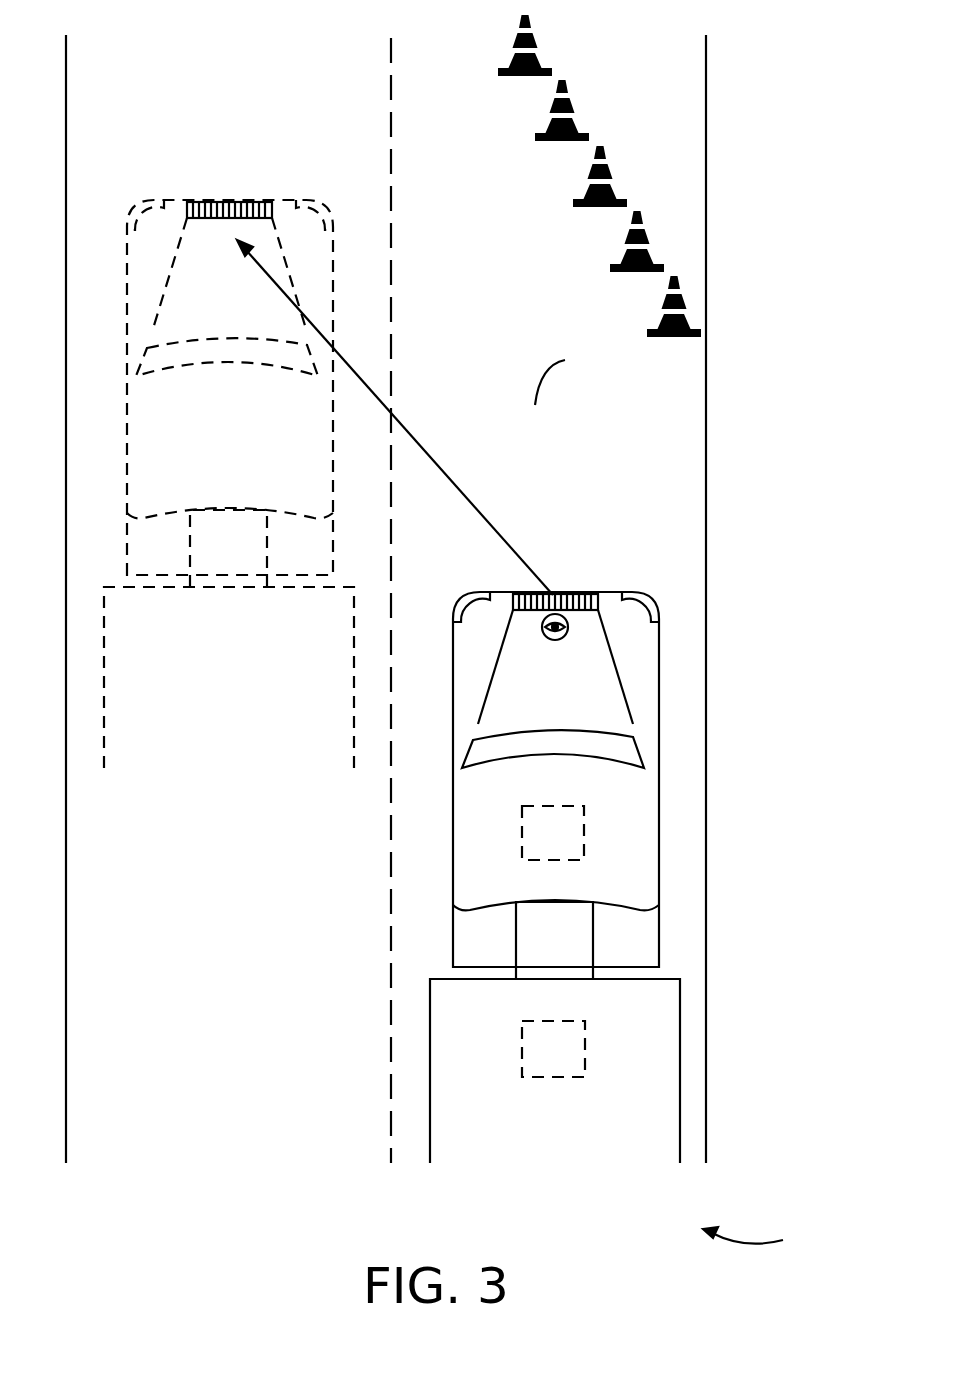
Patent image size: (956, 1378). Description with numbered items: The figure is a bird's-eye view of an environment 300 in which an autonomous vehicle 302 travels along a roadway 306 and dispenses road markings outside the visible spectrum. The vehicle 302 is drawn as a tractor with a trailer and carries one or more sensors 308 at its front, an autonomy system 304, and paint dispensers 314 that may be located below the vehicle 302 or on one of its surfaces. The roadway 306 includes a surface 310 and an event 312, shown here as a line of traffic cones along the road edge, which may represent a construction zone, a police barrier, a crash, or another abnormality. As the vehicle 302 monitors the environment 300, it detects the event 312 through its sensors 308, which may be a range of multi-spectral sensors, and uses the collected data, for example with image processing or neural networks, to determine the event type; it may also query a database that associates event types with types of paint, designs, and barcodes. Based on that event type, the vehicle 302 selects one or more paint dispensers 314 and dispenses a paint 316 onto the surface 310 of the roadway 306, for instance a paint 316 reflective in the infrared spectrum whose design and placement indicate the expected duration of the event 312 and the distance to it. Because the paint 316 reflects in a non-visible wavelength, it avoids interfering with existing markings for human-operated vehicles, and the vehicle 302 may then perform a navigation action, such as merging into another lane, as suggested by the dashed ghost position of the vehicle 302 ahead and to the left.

The environment 300 is at (770, 1241).
The vehicle 302 is at (680, 1062).
The autonomy system 304 is at (594, 958).
The roadway 306 is at (706, 385).
The sensors 308 is at (553, 595).
The surface 310 is at (574, 377).
The event 312 is at (602, 150).
The paint dispensers 314 is at (584, 830).
The paint 316 is at (584, 1040).